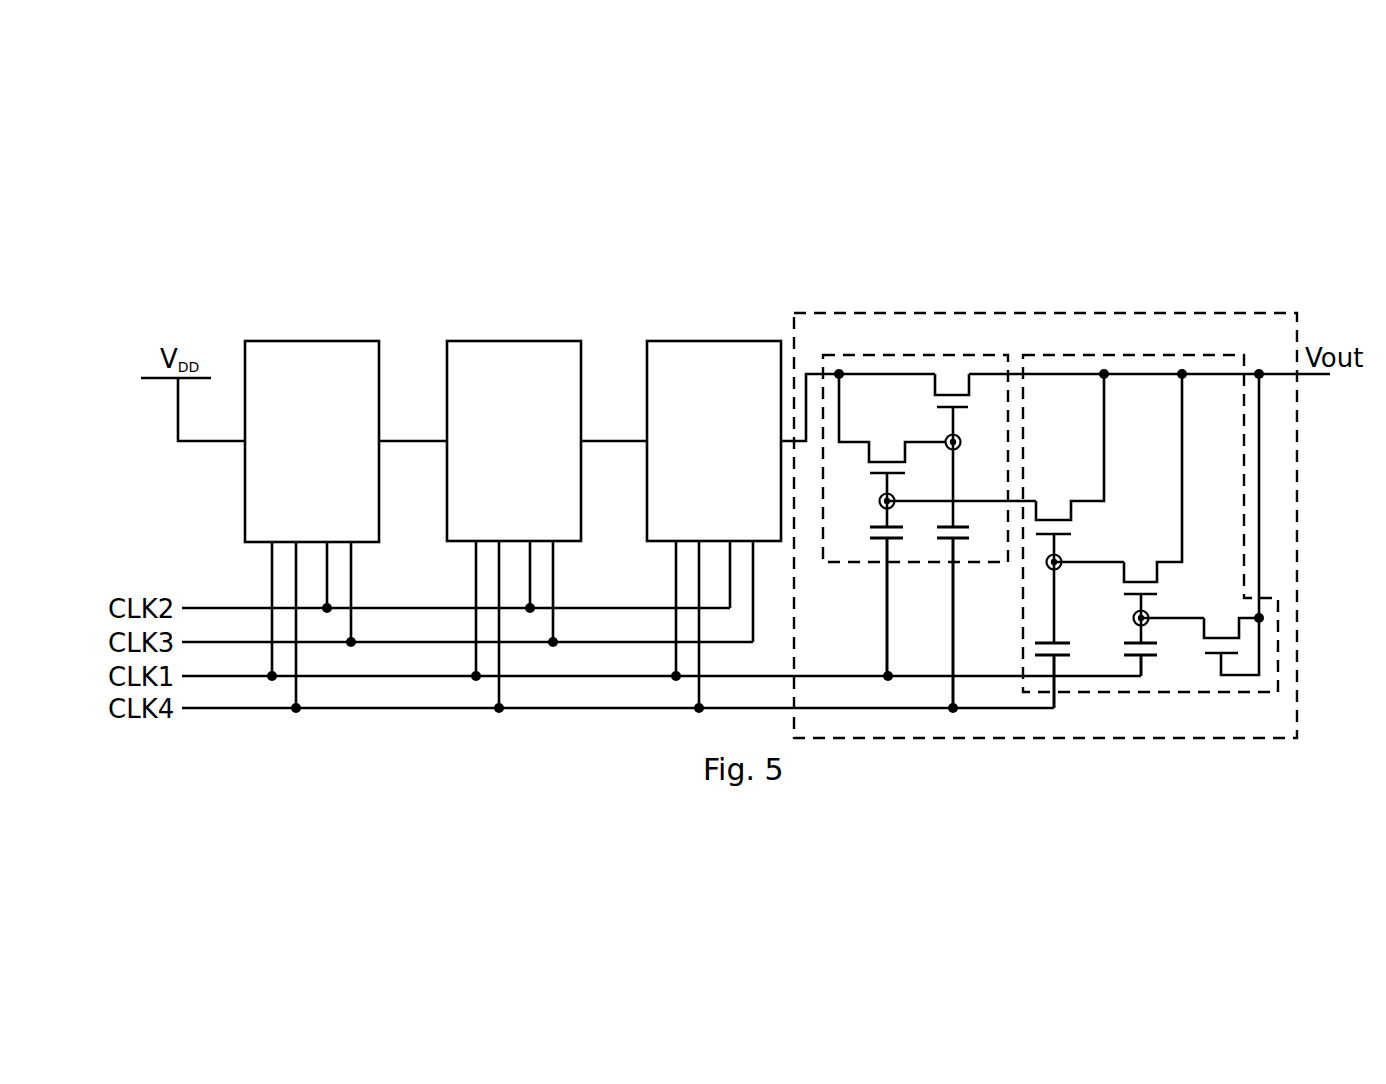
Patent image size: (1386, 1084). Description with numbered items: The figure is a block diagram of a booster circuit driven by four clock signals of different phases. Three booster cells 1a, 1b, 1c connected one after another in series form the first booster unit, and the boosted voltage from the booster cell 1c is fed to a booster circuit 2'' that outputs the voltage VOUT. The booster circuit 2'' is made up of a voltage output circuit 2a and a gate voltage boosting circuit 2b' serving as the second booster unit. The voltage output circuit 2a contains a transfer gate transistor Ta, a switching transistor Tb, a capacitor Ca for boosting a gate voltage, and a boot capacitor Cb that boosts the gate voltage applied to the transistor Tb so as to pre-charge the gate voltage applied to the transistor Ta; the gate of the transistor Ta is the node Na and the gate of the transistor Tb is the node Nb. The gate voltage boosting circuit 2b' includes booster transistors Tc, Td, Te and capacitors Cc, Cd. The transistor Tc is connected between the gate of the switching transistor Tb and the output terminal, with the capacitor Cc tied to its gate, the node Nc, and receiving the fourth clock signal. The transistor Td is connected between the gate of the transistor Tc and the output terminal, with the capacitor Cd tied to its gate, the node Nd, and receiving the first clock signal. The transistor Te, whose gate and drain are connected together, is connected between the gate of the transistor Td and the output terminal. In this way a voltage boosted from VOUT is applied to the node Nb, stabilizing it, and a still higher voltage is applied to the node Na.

The booster cell 1a is at (283, 341).
The booster cell 1b is at (484, 341).
The booster cell 1c is at (684, 341).
The voltage output circuit 2a is at (893, 355).
The gate voltage boosting circuit 2b' is at (1153, 541).
The booster circuit 2'' is at (1045, 505).
The transfer gate transistor Ta is at (965, 395).
The switching transistor Tb is at (903, 461).
The booster transistor Tc is at (1058, 520).
The booster transistor Td is at (1125, 582).
The booster transistor Te is at (1204, 640).
The node Na is at (960, 448).
The node Nb is at (880, 500).
The node Nc is at (1060, 560).
The node Nd is at (1148, 613).
The capacitor Ca is at (946, 545).
The boot capacitor Cb is at (878, 545).
The capacitor Cc is at (1040, 643).
The capacitor Cd is at (1130, 643).